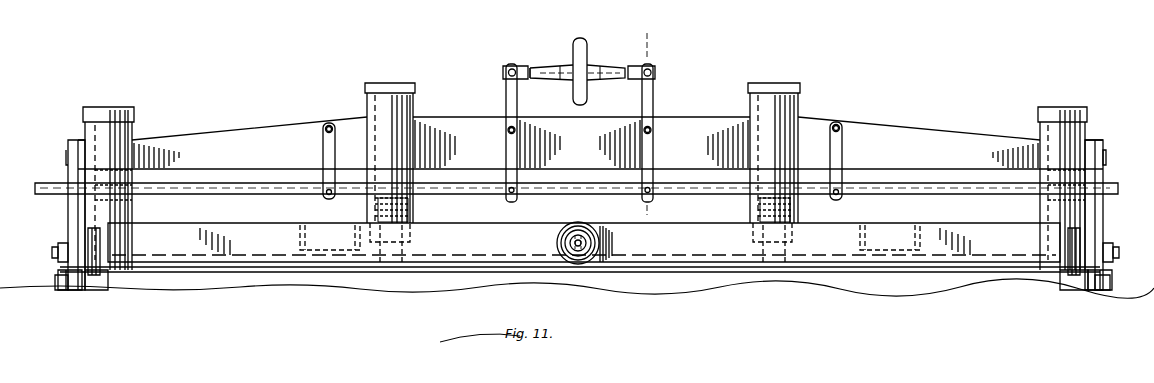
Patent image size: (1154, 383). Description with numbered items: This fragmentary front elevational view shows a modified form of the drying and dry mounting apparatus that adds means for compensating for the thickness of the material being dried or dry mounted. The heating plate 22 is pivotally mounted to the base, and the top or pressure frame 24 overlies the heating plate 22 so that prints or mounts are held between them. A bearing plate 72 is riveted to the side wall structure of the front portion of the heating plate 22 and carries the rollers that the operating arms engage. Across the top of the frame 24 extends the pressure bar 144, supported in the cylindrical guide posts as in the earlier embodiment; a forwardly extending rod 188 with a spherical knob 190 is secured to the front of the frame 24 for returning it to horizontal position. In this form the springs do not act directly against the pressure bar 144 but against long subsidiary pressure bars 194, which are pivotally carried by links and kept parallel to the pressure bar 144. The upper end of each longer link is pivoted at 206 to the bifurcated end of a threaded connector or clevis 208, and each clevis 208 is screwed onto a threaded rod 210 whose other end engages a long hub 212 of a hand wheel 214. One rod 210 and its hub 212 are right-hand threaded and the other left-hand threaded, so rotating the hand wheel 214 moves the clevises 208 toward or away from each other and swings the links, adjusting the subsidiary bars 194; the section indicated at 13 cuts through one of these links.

The section line 13- 13 is at (637, 214).
The heating plate 22 is at (709, 288).
The top or pressure frame 24 is at (852, 227).
The bearing plate 72 is at (102, 243).
The pressure bar 144 is at (200, 137).
The forwardly extending rod 188 is at (600, 243).
The spherical knob 190 is at (556, 243).
The subsidiary pressure bar 194 is at (222, 192).
The pivot 206 is at (500, 80).
The threaded connector or clevis 208 is at (503, 72).
The threaded rod 210 is at (556, 59).
The long hub 212 is at (562, 79).
The hand wheel 214 is at (572, 52).